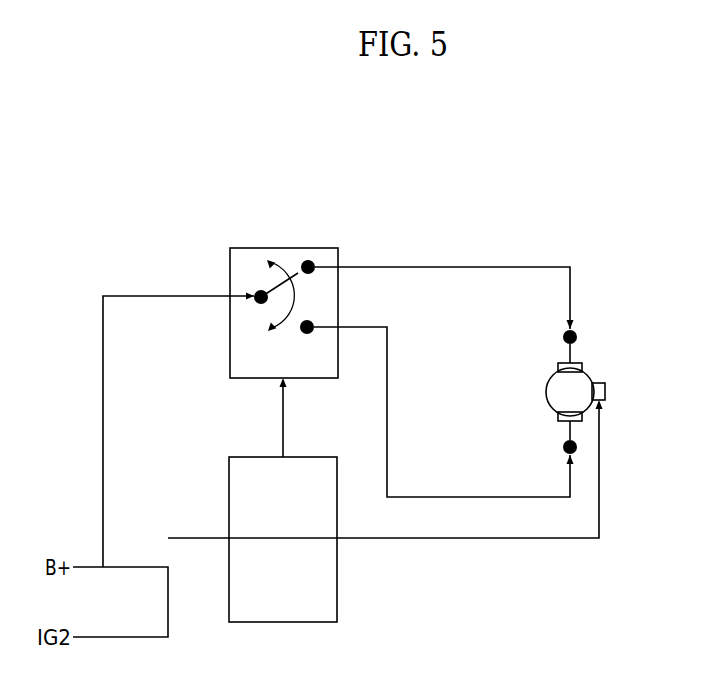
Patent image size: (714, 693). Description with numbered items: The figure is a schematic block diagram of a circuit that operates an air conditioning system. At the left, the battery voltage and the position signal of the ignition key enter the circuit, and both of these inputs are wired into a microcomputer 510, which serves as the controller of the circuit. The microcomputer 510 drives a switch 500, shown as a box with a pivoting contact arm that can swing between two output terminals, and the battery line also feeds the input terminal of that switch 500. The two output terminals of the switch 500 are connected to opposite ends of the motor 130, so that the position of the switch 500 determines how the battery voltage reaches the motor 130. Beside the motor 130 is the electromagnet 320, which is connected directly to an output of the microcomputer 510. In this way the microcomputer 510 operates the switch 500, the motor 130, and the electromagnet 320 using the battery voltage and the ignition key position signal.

The switch 500 is at (283, 247).
The microcomputer 510 is at (338, 593).
The motor 130 is at (590, 373).
The electromagnet 320 is at (605, 384).